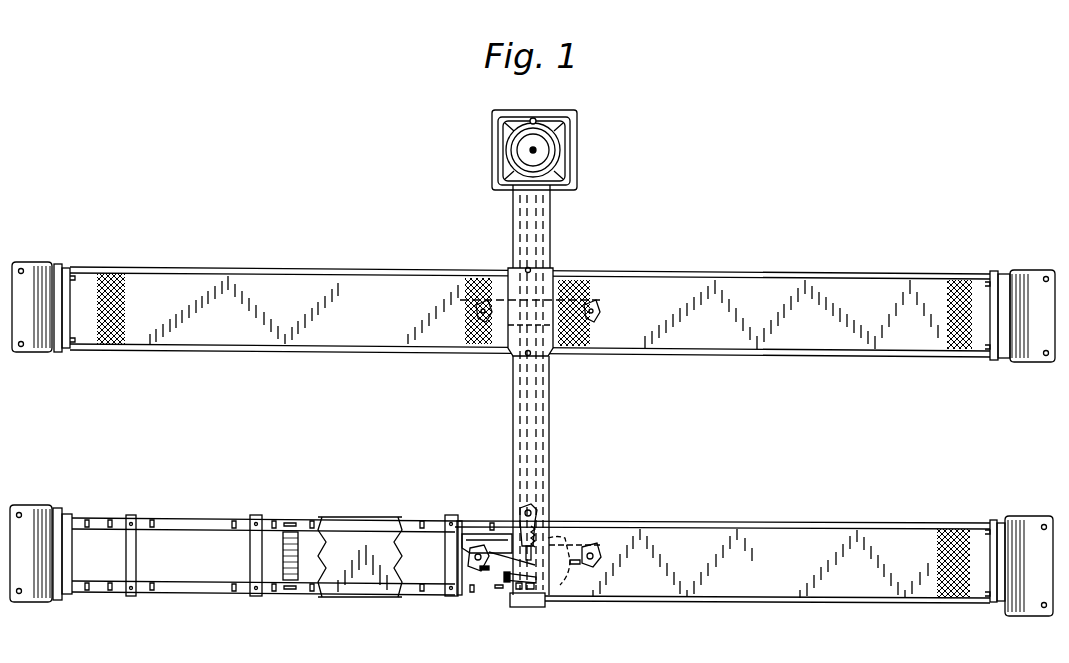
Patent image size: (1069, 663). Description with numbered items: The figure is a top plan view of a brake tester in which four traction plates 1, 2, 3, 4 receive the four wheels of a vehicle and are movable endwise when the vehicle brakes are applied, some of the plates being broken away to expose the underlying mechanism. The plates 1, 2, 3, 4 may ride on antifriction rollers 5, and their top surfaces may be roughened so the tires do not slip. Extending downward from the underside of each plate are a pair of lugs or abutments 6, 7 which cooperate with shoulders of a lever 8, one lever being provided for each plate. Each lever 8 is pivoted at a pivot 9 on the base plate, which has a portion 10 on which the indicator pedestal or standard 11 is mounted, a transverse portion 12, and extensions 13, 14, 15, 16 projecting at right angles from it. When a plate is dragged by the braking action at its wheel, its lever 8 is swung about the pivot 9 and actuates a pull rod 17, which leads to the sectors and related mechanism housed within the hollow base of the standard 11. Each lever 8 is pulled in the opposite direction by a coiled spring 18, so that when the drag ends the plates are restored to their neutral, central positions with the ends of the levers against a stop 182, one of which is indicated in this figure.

The traction plate 1 is at (205, 273).
The traction plate 2 is at (727, 290).
The traction plate 3 is at (359, 545).
The traction plate 4 is at (771, 540).
The antifriction rollers 5 is at (294, 521).
The lug or abutment 6 is at (452, 526).
The lug or abutment 7 is at (482, 572).
The lever 8 is at (500, 552).
The pivot 9 is at (483, 584).
The base plate portion 10 is at (492, 161).
The indicator pedestal or standard 11 is at (578, 114).
The transverse portion 12 is at (552, 216).
The extension 13 is at (332, 273).
The extension 14 is at (842, 279).
The extension 15 is at (197, 596).
The extension 16 is at (712, 602).
The pull rod 17 is at (513, 245).
The coiled spring 18 is at (551, 548).
The stop 182 is at (549, 526).